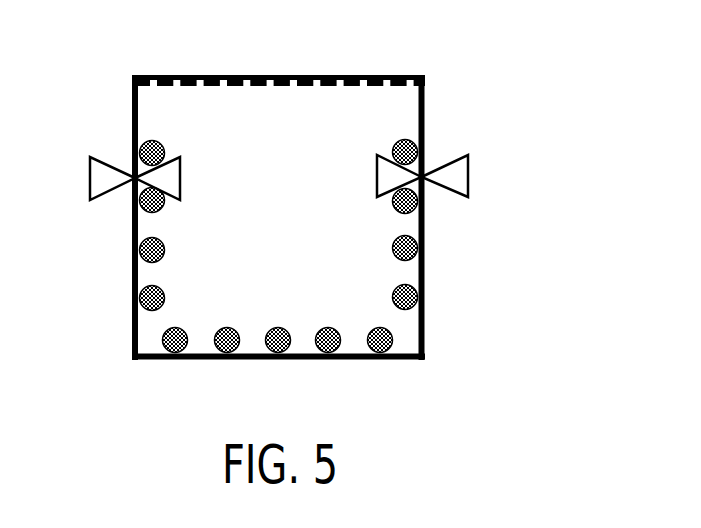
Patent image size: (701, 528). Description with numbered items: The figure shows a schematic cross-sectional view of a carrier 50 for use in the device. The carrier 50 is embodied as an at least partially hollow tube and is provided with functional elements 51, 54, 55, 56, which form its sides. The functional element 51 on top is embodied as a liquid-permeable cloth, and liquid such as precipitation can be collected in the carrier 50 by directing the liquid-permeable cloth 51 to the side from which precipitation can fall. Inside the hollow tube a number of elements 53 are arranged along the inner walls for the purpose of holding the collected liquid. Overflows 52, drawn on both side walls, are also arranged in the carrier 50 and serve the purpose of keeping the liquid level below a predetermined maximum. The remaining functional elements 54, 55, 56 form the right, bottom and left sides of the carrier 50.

The carrier 50 is at (541, 84).
The liquid-permeable cloth 51 is at (255, 75).
The overflow 52 is at (97, 177).
The element for holding liquid 53 is at (136, 245).
The functional element 54 is at (425, 113).
The functional element 55 is at (303, 360).
The functional element 56 is at (132, 115).